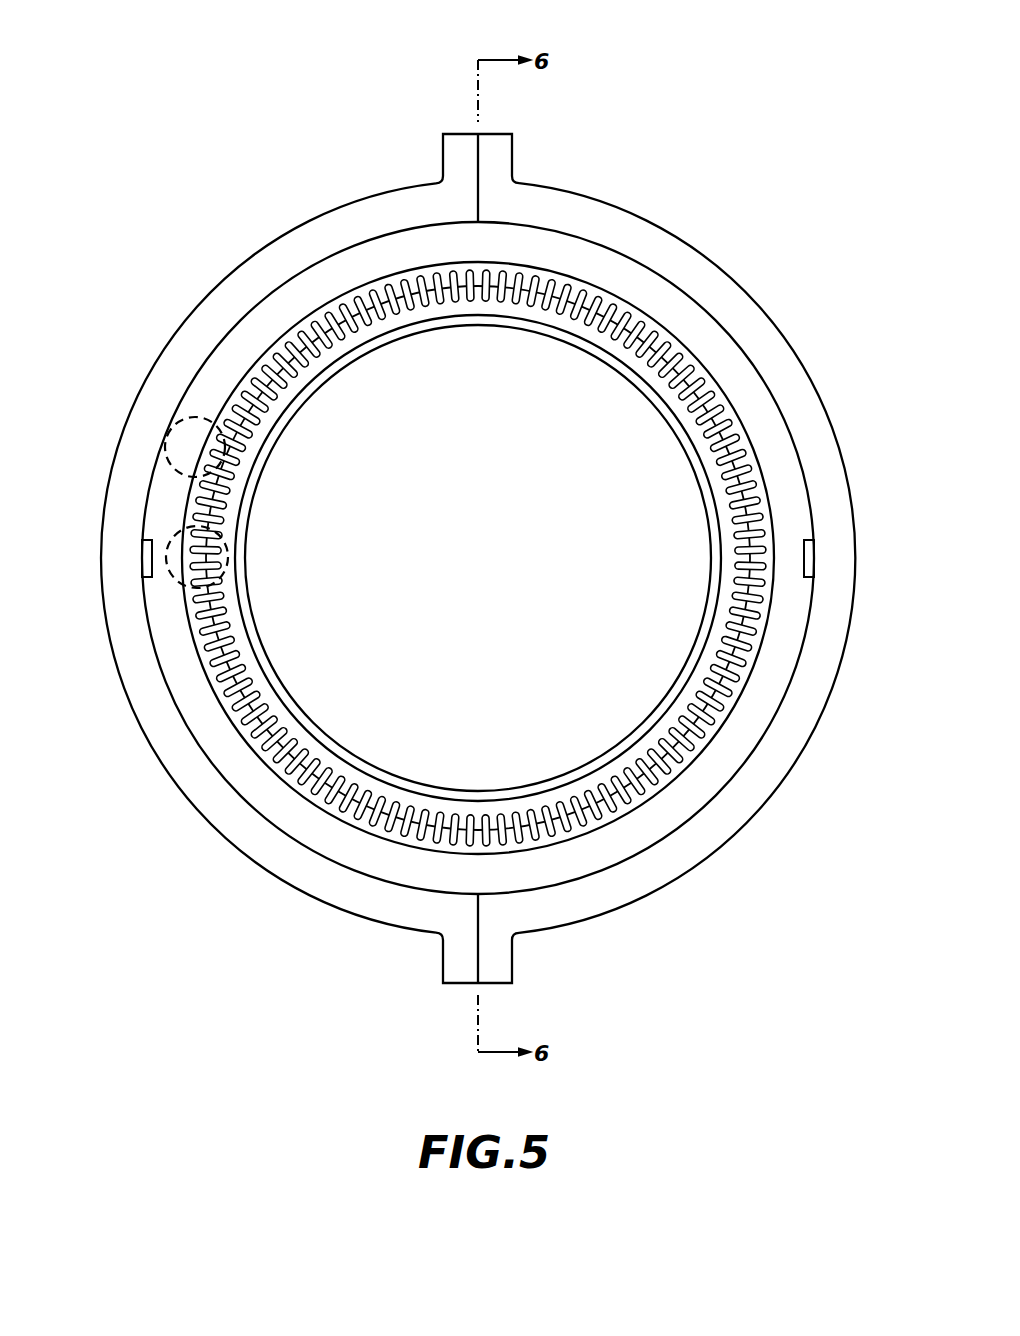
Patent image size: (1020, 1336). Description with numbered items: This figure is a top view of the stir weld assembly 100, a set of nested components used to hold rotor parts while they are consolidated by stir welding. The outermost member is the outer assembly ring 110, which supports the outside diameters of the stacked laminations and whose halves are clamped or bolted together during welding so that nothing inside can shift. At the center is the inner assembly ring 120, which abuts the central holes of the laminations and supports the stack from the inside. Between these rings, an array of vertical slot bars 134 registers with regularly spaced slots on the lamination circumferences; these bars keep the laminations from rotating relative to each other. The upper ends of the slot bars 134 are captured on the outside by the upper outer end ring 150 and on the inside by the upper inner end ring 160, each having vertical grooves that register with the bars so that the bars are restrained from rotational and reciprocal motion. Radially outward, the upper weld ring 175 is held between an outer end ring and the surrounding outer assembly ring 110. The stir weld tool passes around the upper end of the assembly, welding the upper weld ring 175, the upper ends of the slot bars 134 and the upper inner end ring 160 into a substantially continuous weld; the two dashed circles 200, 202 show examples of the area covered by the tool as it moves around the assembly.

The stir weld assembly 100 is at (763, 254).
The outer assembly ring 110 is at (618, 197).
The inner assembly ring 120 is at (361, 758).
The slot bar 134 is at (702, 390).
The upper outer end ring 150 is at (641, 798).
The upper inner end ring 160 is at (596, 330).
The upper weld ring 175 is at (311, 836).
The circle 200 is at (170, 536).
The circle 202 is at (182, 418).